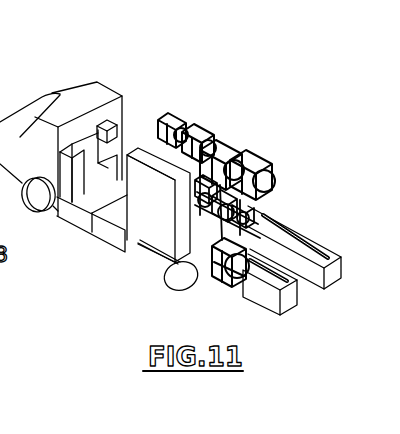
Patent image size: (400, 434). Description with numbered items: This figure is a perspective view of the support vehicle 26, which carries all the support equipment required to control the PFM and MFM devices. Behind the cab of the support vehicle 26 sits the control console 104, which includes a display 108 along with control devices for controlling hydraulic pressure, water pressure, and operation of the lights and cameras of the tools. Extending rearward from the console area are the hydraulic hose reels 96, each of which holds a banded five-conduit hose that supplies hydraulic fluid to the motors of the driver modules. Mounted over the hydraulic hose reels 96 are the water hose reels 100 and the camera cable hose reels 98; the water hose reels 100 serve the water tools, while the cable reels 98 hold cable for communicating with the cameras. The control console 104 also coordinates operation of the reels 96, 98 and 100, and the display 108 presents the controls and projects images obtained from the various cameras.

The support vehicle 26 is at (293, 92).
The hydraulic hose reels 96 is at (210, 262).
The camera cable hose reels 98 is at (190, 124).
The water hose reels 100 is at (247, 152).
The control console 104 is at (130, 143).
The display 108 is at (107, 120).